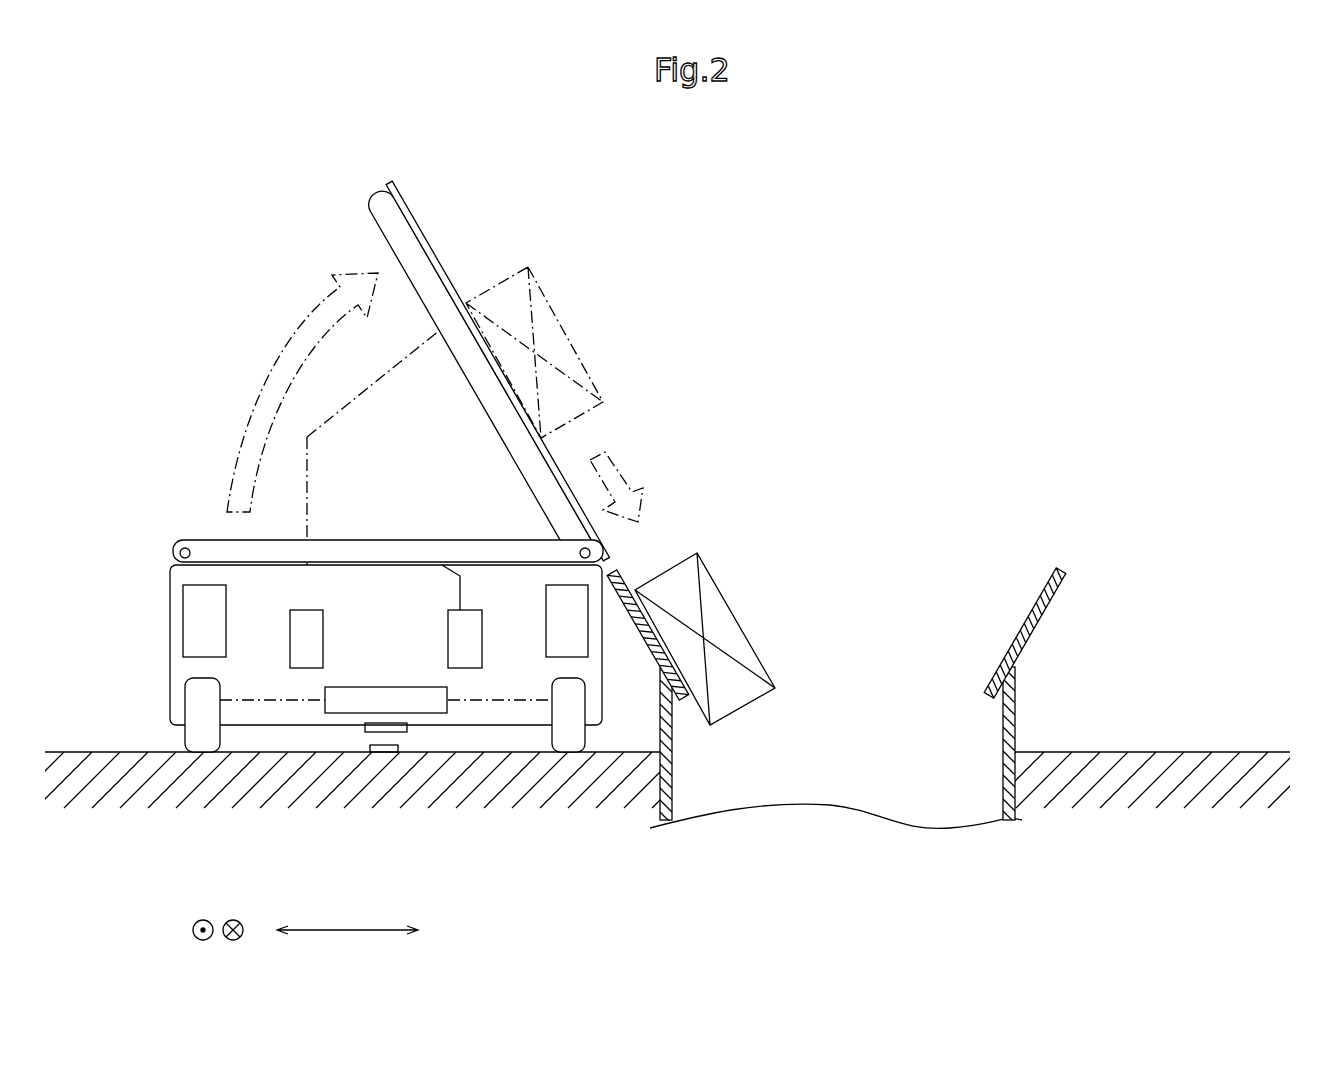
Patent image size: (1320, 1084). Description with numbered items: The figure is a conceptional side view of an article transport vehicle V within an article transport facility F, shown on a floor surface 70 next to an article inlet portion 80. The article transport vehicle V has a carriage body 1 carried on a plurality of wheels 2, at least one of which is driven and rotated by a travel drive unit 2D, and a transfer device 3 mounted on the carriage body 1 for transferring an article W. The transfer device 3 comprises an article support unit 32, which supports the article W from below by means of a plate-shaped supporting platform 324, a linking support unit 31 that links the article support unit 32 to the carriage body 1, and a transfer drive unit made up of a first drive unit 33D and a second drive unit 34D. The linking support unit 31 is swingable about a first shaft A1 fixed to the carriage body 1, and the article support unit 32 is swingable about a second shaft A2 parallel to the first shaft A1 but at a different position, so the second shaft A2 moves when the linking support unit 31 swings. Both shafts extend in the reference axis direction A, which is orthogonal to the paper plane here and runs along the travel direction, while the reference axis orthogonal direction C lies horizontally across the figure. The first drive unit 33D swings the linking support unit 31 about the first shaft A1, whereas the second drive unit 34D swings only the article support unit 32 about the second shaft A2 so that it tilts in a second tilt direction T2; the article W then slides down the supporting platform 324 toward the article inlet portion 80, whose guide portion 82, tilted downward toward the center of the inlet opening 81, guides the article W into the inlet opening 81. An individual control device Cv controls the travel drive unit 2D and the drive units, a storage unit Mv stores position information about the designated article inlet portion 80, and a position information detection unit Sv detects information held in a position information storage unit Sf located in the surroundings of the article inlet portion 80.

The carriage body 1 is at (367, 691).
The wheels 2 is at (185, 725).
The transfer device 3 is at (195, 415).
The linking support unit 31 is at (350, 499).
The article support unit 32 is at (489, 337).
The supporting platform 324 is at (428, 232).
The travel drive unit 2D is at (385, 687).
The first drive unit 33D is at (448, 645).
The second drive unit 34D is at (290, 640).
The individual control device Cv is at (183, 620).
The storage unit Mv is at (546, 625).
The position information detection unit Sv is at (365, 729).
The position information storage unit Sf is at (385, 754).
The floor surface 70 is at (1145, 750).
The article inlet portion 80 is at (1020, 492).
The inlet opening 81 is at (1000, 713).
The guide portion 82 is at (640, 565).
The first shaft A1 is at (185, 545).
The second shaft A2 is at (580, 552).
The second tilt direction T2 is at (432, 397).
The article W is at (556, 310).
The article transport vehicle V is at (168, 320).
The article transport facility F is at (1080, 211).
The reference axis direction A is at (218, 917).
The reference axis orthogonal direction C is at (347, 916).